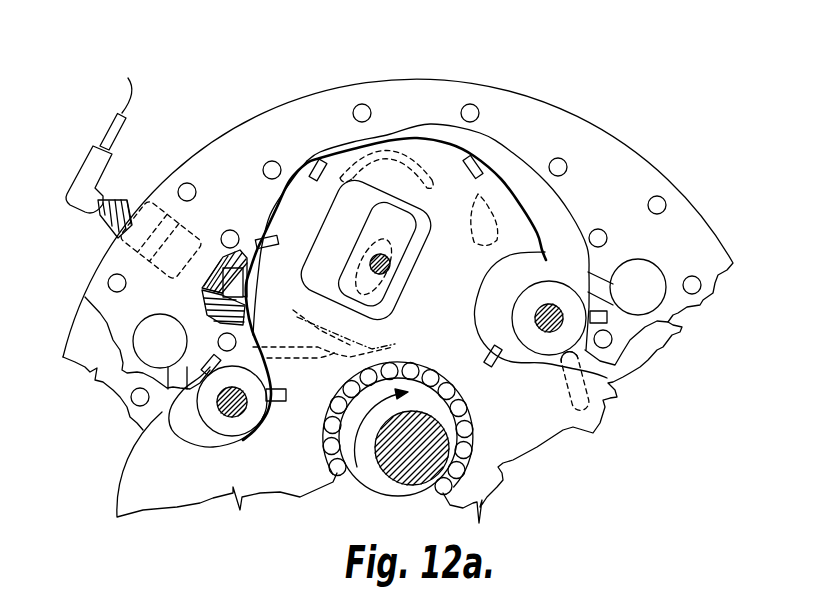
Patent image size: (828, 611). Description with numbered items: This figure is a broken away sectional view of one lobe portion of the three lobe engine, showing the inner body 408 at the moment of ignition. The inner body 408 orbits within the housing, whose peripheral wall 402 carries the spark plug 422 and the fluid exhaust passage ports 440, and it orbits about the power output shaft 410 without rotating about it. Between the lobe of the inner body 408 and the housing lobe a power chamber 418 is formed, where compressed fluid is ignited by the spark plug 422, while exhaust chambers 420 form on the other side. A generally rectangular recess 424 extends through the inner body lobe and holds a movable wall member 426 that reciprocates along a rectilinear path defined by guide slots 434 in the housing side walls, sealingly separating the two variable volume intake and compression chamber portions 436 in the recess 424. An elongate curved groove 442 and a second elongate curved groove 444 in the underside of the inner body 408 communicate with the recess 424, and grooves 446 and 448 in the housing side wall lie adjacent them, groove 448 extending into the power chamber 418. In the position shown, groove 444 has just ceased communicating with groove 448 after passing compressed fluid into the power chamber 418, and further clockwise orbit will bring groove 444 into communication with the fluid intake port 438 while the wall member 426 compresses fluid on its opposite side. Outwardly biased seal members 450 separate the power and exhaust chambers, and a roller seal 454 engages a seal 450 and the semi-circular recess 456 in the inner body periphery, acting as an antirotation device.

The peripheral wall 402 is at (527, 113).
The inner body 408 is at (280, 193).
The power output shaft 410 is at (385, 487).
The power chamber 418 is at (263, 370).
The exhaust chamber 420 is at (520, 163).
The spark plug 422 is at (128, 213).
The recess 424 is at (340, 197).
The movable wall member 426 is at (417, 253).
The guide slot 434 is at (345, 262).
The intake and compression chamber portion 436 is at (333, 230).
The fluid intake port 438 is at (297, 310).
The fluid exhaust passage port 440 is at (157, 320).
The elongate curved groove 442 is at (398, 162).
The second elongate curved groove 444 is at (370, 343).
The groove 446 is at (493, 227).
The groove 448 is at (313, 332).
The seal member 450 is at (315, 162).
The roller seal 454 is at (247, 420).
The semi-circular recess 456 is at (223, 442).